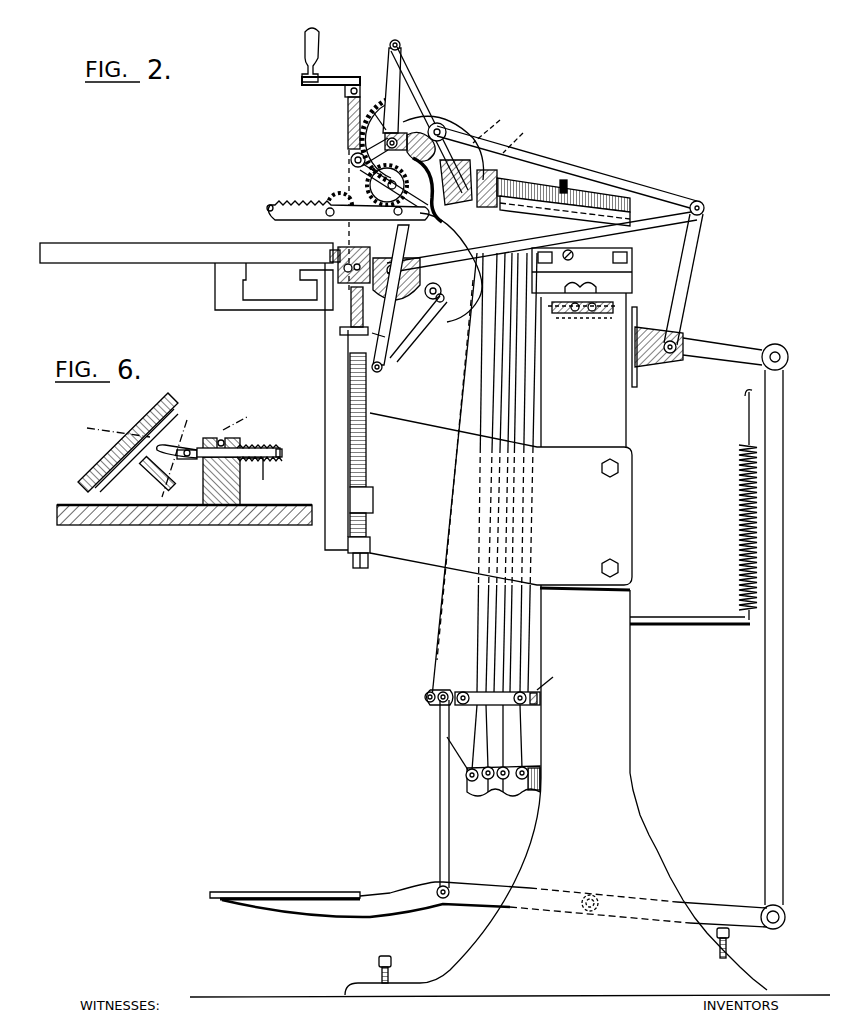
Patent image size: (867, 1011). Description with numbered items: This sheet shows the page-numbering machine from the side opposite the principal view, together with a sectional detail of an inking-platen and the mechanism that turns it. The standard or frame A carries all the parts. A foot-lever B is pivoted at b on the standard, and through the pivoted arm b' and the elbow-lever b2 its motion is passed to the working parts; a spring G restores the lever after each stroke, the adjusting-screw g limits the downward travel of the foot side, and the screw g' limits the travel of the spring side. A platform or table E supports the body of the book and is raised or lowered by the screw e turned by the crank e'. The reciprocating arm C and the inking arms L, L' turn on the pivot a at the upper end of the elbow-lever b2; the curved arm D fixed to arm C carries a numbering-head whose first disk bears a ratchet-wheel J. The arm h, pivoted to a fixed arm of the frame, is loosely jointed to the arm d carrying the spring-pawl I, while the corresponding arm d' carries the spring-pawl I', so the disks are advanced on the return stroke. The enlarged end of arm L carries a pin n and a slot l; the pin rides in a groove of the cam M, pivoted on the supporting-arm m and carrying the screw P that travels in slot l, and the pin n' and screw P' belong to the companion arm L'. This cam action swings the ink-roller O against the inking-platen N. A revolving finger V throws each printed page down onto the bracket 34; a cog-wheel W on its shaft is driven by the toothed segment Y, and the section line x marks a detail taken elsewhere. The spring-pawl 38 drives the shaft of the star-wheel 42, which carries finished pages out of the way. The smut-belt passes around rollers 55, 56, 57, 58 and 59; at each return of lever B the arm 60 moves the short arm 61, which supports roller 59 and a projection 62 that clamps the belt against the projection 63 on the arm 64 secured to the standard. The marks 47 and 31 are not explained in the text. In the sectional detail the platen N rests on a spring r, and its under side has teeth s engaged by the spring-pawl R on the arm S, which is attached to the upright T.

In FIG. 2, the standard A is at (510, 622).
In FIG. 2, the platform E is at (184, 236).
In FIG. 2, the star-wheel 42 is at (300, 281).
In FIG. 2, the clamp 47 is at (330, 303).
In FIG. 2, the bracket 34 is at (322, 248).
In FIG. 2, the revolving finger V is at (578, 153).
In FIG. 2, the spring-pawl 38 is at (344, 325).
In FIG. 2, the bar 31 is at (356, 307).
In FIG. 2, the screw e is at (353, 415).
In FIG. 2, the crank e' is at (331, 62).
In FIG. 2, the ratchet-wheel J is at (346, 130).
In FIG. 2, the ink-roller O is at (351, 158).
In FIG. 2, the toothed segment Y is at (362, 170).
In FIG. 2, the cog-wheel W is at (348, 203).
In FIG. 2, the section line x is at (389, 192).
In FIG. 2, the arm d is at (383, 86).
In FIG. 2, the arm h is at (430, 95).
In FIG. 2, the spring-pawl I is at (376, 108).
In FIG. 2, the screw P is at (397, 121).
In FIG. 2, the cam M is at (422, 125).
In FIG. 2, the pin n is at (432, 119).
In FIG. 2, the inking-platen N is at (455, 170).
In FIG. 6, the inking-platen N is at (160, 408).
In FIG. 2, the slot l is at (437, 119).
In FIG. 2, the curved arm D is at (470, 190).
In FIG. 2, the supporting-arm m is at (442, 190).
In FIG. 2, the arm L is at (567, 168).
In FIG. 2, the arm L' is at (542, 242).
In FIG. 2, the reciprocating arm C is at (600, 192).
In FIG. 2, the pivot a is at (705, 208).
In FIG. 2, the elbow-lever b2 is at (718, 362).
In FIG. 2, the pivoted arm b' is at (764, 649).
In FIG. 2, the spring G is at (738, 510).
In FIG. 2, the screw P' is at (444, 296).
In FIG. 2, the pin n' is at (437, 328).
In FIG. 2, the spring-pawl I' is at (390, 316).
In FIG. 2, the arm d' is at (337, 347).
In FIG. 2, the roller 59 is at (424, 698).
In FIG. 2, the short arm 61 is at (444, 690).
In FIG. 2, the arm 60 is at (439, 814).
In FIG. 2, the projection 62 is at (462, 692).
In FIG. 2, the projection 63 is at (478, 692).
In FIG. 2, the arm 64 is at (498, 702).
In FIG. 2, the roller 55 is at (470, 782).
In FIG. 2, the roller 56 is at (490, 788).
In FIG. 2, the roller 57 is at (505, 788).
In FIG. 2, the roller 58 is at (524, 782).
In FIG. 2, the foot-lever B is at (334, 890).
In FIG. 2, the pivot b is at (590, 890).
In FIG. 6, the pivot b is at (239, 439).
In FIG. 2, the adjusting-screw g is at (369, 969).
In FIG. 2, the screw g' is at (735, 944).
In FIG. 6, the teeth s is at (177, 437).
In FIG. 6, the spring r is at (143, 479).
In FIG. 6, the spring-pawl R is at (191, 428).
In FIG. 6, the arm S is at (221, 460).
In FIG. 6, the upright T is at (240, 488).